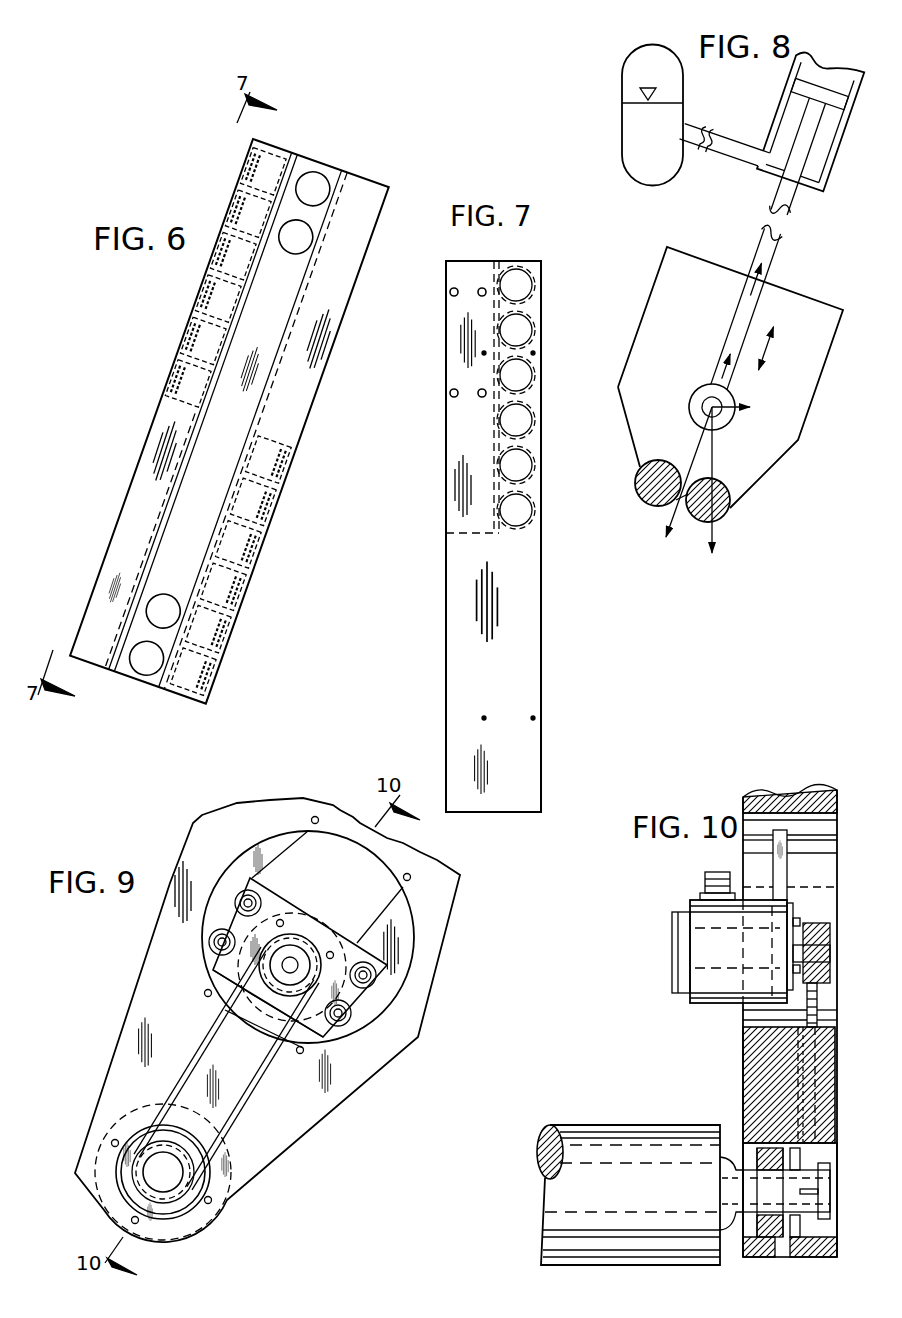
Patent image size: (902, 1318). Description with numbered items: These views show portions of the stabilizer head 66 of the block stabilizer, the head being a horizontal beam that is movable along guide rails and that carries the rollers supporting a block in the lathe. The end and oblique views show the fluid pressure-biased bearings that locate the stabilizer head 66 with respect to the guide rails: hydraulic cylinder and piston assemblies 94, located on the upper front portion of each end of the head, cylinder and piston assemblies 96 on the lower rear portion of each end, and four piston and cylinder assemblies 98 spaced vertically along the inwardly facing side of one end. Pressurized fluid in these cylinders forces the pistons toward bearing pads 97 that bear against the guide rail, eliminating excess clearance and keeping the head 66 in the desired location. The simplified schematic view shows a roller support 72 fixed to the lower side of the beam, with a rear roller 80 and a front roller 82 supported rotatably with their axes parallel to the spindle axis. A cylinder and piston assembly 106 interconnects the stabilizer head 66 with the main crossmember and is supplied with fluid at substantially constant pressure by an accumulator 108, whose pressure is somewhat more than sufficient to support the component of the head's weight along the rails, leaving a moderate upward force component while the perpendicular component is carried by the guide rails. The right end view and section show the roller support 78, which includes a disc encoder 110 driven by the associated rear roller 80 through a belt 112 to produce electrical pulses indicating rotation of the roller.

In FIG. 6, the stabilizer head 66 is at (138, 438).
In FIG. 7, the stabilizer head 66 is at (440, 620).
In FIG. 8, the roller support 72 is at (798, 440).
In FIG. 9, the roller support 78 is at (443, 939).
In FIG. 10, the roller support 78 is at (834, 803).
In FIG. 8, the rear roller 80 is at (722, 520).
In FIG. 9, the rear roller 80 is at (207, 1222).
In FIG. 10, the rear roller 80 is at (630, 1255).
In FIG. 8, the front roller 82 is at (653, 504).
In FIG. 6, the cylinder and piston assembly 94 is at (247, 167).
In FIG. 7, the cylinder and piston assembly 94 is at (528, 287).
In FIG. 6, the cylinder and piston assembly 96 is at (273, 462).
In FIG. 6, the bearing pad 97 is at (299, 151).
In FIG. 6, the piston and cylinder assembly 98 is at (315, 208).
In FIG. 8, the cylinder and piston assembly 106 is at (838, 158).
In FIG. 8, the accumulator 108 is at (622, 85).
In FIG. 9, the disc encoder 110 is at (347, 943).
In FIG. 10, the disc encoder 110 is at (703, 1008).
In FIG. 9, the belt 112 is at (258, 1080).
In FIG. 10, the belt 112 is at (820, 1066).